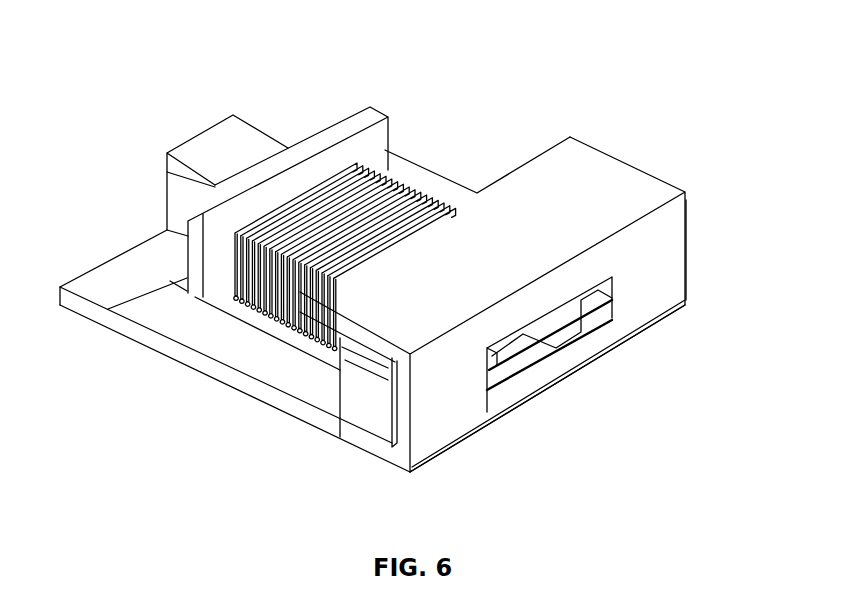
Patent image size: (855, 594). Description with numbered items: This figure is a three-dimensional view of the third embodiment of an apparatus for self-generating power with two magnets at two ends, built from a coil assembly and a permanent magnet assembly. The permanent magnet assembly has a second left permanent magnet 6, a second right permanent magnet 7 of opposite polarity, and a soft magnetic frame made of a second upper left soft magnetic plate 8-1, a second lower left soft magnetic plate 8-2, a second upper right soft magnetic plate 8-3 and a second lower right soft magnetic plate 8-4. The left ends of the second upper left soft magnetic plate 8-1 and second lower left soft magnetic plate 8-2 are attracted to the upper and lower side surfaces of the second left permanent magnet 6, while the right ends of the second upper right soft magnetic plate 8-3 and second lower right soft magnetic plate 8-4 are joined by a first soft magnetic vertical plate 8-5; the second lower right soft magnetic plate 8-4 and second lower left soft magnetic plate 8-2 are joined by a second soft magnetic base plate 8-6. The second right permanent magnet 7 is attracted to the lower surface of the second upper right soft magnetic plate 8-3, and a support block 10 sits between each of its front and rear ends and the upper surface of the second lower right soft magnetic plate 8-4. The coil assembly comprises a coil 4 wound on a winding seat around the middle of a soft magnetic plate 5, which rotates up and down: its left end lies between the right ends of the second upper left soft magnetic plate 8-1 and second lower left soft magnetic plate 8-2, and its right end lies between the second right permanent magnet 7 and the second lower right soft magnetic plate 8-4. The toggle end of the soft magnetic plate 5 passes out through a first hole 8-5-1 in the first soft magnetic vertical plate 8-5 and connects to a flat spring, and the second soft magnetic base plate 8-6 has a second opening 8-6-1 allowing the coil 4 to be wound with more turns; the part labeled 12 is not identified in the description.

The coil 4 is at (507, 355).
The soft magnetic plate 5 is at (357, 160).
The second left permanent magnet 6 is at (175, 205).
The second right permanent magnet 7 is at (353, 352).
The support block 10 is at (382, 407).
The clip 12 is at (577, 315).
The second upper left soft magnetic plate 8-1 is at (233, 140).
The second lower left soft magnetic plate 8-2 is at (138, 268).
The second upper right soft magnetic plate 8-3 is at (593, 175).
The second lower right soft magnetic plate 8-4 is at (356, 398).
The first soft magnetic vertical plate 8-5 is at (657, 267).
The first hole 8-5-1 is at (515, 380).
The second soft magnetic base plate 8-6 is at (207, 338).
The second opening 8-6-1 is at (297, 333).